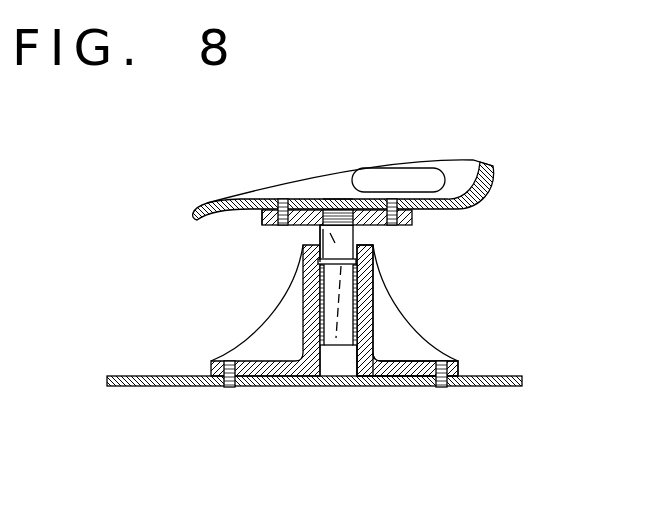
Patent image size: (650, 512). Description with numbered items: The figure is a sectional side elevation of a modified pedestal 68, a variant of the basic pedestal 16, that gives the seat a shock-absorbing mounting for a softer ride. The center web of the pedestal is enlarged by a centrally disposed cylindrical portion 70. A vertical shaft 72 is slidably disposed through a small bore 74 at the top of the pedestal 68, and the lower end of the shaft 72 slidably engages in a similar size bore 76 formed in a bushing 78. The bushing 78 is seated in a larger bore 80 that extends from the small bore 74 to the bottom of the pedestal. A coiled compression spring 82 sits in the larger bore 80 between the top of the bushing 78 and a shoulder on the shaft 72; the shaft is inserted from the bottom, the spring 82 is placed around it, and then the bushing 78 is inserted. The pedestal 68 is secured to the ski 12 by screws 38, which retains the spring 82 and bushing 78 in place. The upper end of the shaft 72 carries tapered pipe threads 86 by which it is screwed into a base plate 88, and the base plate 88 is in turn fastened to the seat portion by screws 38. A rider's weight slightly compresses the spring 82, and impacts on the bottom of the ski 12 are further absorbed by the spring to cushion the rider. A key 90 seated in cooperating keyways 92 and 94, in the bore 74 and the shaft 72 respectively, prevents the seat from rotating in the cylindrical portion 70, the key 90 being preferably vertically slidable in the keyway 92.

The ski 12 is at (140, 387).
The pedestal 16 is at (372, 200).
The screws 38 is at (285, 200).
The modified pedestal 68 is at (476, 317).
The cylindrical portion 70 is at (373, 280).
The vertical shaft 72 is at (412, 218).
The small bore 74 is at (353, 244).
The bore in bushing 76 is at (346, 357).
The bushing 78 is at (364, 367).
The larger bore 80 is at (322, 387).
The coiled compression spring 82 is at (322, 296).
The tapered pipe threads 86 is at (345, 200).
The base plate 88 is at (262, 214).
The key 90 is at (320, 236).
The keyway 92 is at (318, 265).
The keyway 94 is at (375, 338).